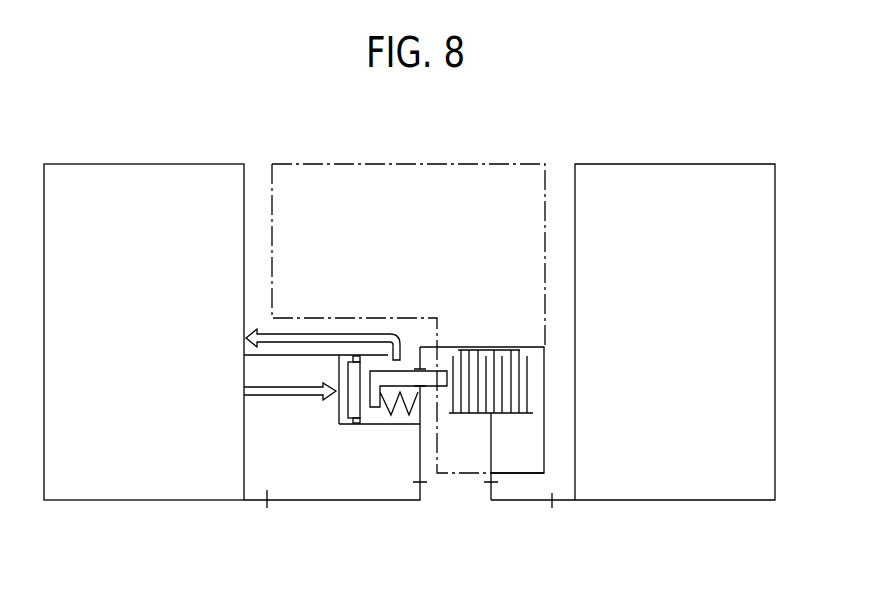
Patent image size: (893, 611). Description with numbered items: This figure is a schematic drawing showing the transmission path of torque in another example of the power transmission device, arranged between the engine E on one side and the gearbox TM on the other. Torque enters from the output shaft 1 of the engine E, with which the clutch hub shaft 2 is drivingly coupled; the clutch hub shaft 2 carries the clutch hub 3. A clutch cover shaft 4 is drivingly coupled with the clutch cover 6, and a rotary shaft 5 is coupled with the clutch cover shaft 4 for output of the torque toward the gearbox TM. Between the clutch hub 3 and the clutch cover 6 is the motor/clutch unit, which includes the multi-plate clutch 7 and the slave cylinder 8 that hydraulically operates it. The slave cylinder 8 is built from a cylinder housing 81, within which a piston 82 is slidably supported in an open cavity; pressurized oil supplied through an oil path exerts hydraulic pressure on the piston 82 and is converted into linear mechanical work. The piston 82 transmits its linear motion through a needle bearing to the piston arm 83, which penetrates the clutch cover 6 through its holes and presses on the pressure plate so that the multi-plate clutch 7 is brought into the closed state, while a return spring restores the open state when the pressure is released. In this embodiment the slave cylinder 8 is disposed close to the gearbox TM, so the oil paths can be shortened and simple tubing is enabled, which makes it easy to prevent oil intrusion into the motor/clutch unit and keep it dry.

The output shaft 1 is at (563, 505).
The clutch hub shaft 2 is at (509, 505).
The clutch hub 3 is at (494, 445).
The clutch cover shaft 4 is at (375, 505).
The rotary shaft 5 is at (255, 505).
The clutch cover 6 is at (448, 346).
The multi-plate clutch 7 is at (543, 380).
The slave cylinder 8 is at (347, 436).
The cylinder housing 81 is at (383, 427).
The piston 82 is at (350, 402).
The piston arm 83 is at (403, 372).
The gearbox TM is at (137, 152).
The engine E is at (645, 152).